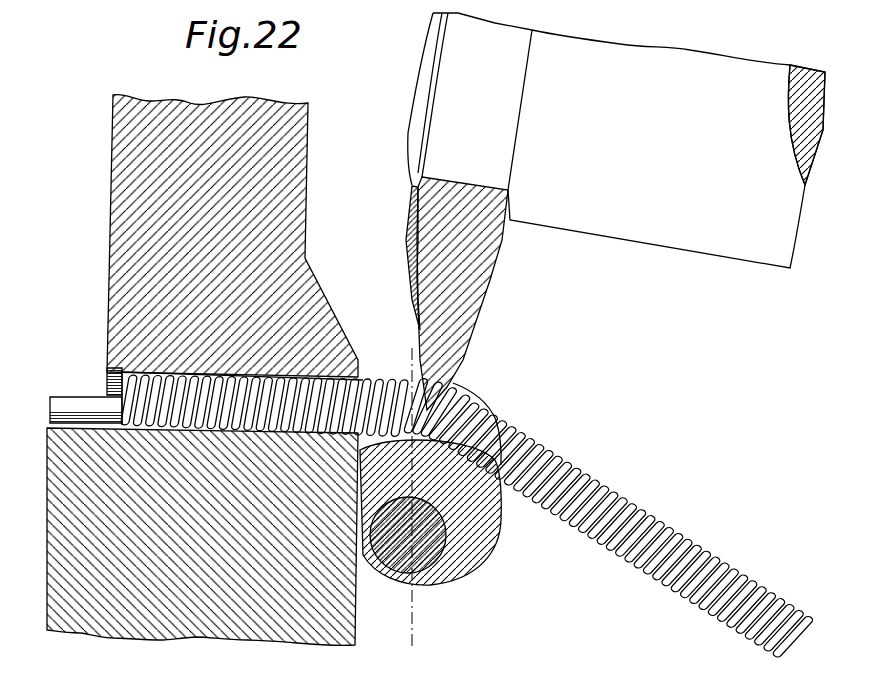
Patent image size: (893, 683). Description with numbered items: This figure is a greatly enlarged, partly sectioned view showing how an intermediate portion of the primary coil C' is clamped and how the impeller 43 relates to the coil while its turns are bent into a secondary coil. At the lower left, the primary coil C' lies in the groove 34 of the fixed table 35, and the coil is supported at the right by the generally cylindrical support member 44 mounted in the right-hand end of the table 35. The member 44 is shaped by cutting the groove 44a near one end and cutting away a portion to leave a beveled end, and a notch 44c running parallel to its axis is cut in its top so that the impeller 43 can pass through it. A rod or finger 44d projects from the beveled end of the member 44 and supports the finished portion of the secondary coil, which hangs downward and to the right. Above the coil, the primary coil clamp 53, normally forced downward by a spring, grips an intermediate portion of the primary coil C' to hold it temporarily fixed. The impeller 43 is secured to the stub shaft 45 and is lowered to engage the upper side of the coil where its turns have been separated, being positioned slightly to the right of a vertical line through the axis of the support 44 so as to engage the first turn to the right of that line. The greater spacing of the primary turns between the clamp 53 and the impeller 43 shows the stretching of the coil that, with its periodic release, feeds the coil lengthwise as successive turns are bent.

The primary coil clamp 53 is at (307, 228).
The stub shaft 45 is at (616, 140).
The impeller 43 is at (527, 310).
The support member 44 is at (539, 588).
The groove 44a is at (556, 543).
The notch 44c is at (516, 380).
The rod or finger 44d is at (427, 563).
The primary coil C' is at (626, 530).
The fixed table 35 is at (372, 628).
The groove 34 is at (68, 412).